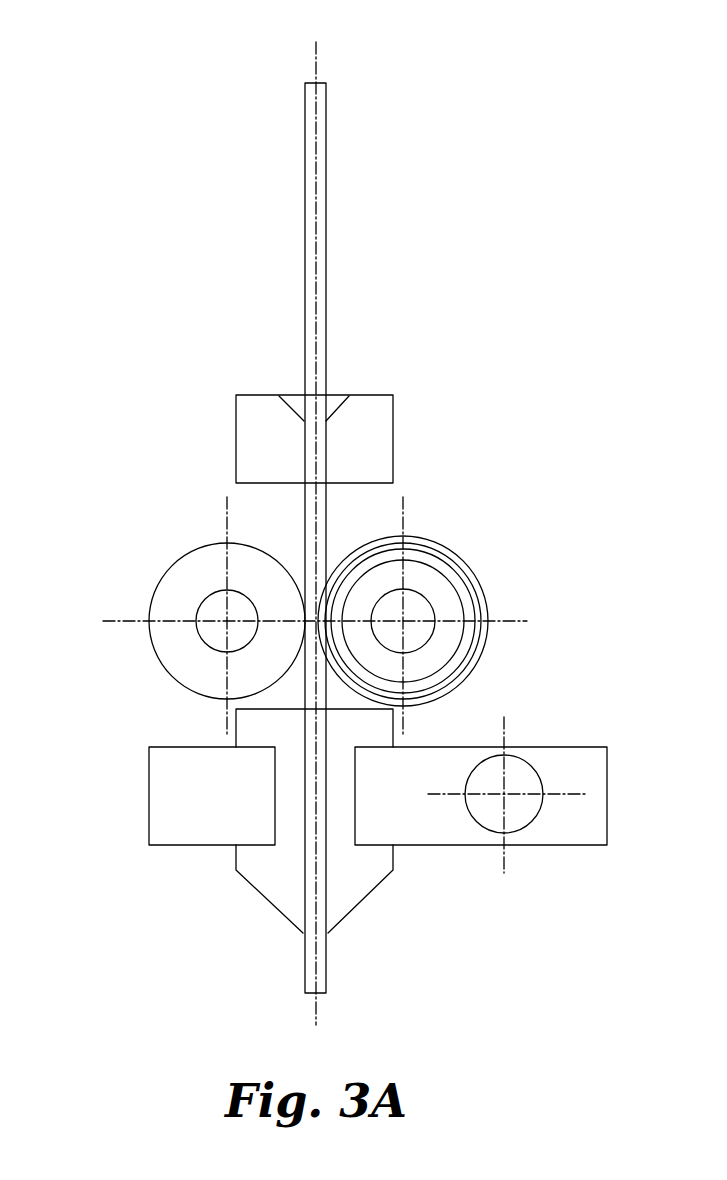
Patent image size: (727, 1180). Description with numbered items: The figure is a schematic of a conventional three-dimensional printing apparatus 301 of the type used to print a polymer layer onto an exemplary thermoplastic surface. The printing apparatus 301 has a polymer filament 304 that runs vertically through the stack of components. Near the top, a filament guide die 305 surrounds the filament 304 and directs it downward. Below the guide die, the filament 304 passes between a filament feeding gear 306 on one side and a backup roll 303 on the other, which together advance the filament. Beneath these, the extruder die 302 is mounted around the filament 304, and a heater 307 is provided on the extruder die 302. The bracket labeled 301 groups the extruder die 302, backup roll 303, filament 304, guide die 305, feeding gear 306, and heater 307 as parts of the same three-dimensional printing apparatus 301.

The 3-D printing apparatus 301 is at (82, 74).
The extruder die 302 is at (263, 895).
The backup roll 303 is at (180, 558).
The polymer filament 304 is at (318, 82).
The filament guide die 305 is at (393, 415).
The filament feeding gear 306 is at (466, 566).
The heater 307 is at (534, 768).